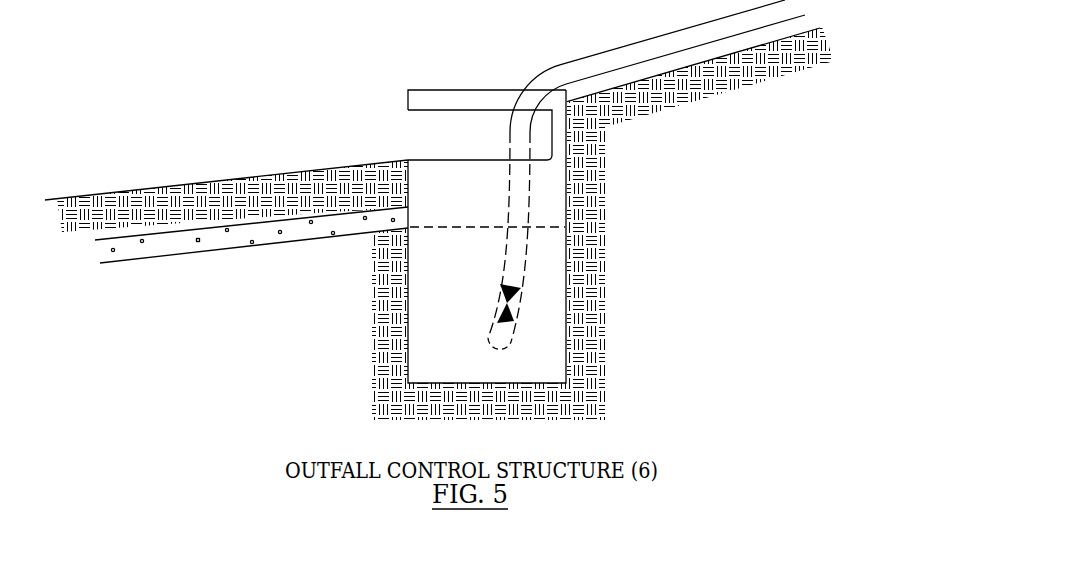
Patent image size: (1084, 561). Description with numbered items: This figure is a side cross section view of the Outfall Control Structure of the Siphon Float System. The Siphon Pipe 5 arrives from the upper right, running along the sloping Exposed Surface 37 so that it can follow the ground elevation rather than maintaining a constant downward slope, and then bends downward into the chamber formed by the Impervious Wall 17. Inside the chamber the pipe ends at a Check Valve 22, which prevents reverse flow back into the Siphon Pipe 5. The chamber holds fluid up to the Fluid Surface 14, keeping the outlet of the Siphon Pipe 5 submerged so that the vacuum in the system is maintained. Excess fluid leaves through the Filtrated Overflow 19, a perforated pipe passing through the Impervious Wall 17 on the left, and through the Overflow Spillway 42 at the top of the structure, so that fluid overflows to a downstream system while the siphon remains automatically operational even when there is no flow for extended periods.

The siphon pipe 5 is at (619, 40).
The exposed surface 37 is at (658, 75).
The overflow spillway 42 is at (403, 155).
The fluid surface 14 is at (473, 216).
The filtrated overflow 19 is at (302, 241).
The impervious wall 17 is at (397, 333).
The check valve 22 is at (492, 304).